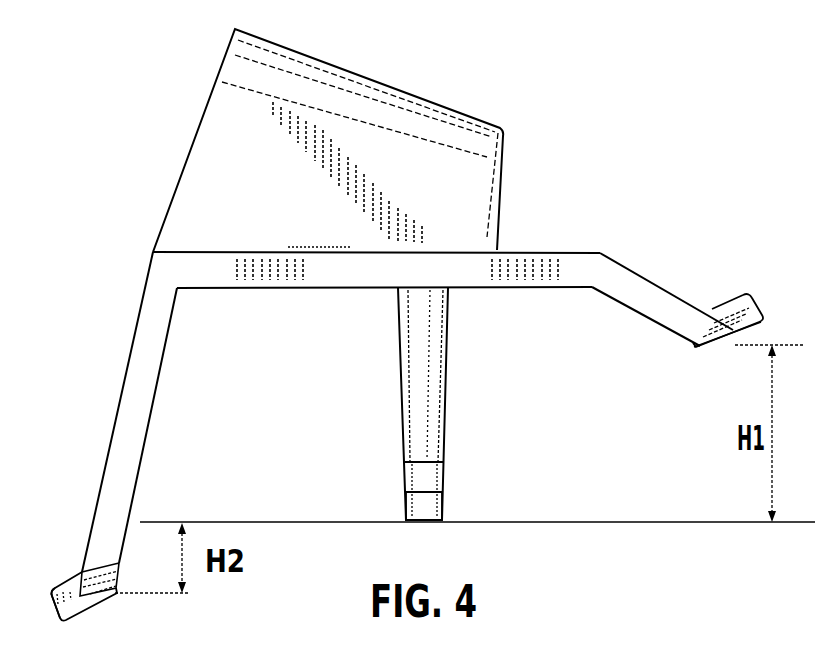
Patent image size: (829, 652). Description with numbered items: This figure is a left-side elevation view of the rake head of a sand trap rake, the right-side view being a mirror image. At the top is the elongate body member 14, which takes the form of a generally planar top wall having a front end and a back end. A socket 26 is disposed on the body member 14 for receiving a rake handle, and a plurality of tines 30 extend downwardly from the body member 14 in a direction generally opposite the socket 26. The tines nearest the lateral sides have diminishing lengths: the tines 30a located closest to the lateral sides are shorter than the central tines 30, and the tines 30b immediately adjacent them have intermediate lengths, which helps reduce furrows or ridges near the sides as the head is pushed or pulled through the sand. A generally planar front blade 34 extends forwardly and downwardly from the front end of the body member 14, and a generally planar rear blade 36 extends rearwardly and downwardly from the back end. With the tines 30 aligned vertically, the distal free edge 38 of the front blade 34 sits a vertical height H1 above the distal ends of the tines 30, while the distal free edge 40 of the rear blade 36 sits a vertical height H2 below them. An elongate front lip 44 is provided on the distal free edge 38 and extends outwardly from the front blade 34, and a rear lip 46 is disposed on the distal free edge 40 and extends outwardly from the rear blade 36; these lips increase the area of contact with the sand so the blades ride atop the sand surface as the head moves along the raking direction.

The elongate body member 14 is at (553, 252).
The socket 26 is at (322, 61).
The tines 30 is at (420, 522).
The tines located closest to the lateral sides 30a is at (447, 472).
The tines immediately adjacent tines 30a 30b is at (441, 497).
The front blade 34 is at (661, 286).
The rear blade 36 is at (102, 477).
The distal free edge of the front blade 38 is at (706, 349).
The distal free edge of the rear blade 40 is at (83, 607).
The front lip 44 is at (757, 308).
The rear lip 46 is at (52, 613).